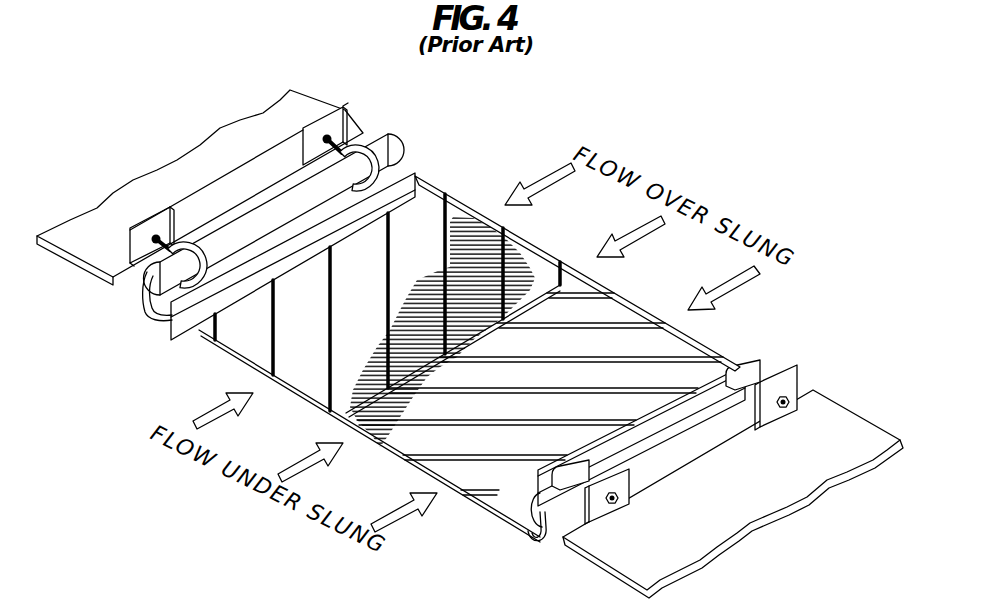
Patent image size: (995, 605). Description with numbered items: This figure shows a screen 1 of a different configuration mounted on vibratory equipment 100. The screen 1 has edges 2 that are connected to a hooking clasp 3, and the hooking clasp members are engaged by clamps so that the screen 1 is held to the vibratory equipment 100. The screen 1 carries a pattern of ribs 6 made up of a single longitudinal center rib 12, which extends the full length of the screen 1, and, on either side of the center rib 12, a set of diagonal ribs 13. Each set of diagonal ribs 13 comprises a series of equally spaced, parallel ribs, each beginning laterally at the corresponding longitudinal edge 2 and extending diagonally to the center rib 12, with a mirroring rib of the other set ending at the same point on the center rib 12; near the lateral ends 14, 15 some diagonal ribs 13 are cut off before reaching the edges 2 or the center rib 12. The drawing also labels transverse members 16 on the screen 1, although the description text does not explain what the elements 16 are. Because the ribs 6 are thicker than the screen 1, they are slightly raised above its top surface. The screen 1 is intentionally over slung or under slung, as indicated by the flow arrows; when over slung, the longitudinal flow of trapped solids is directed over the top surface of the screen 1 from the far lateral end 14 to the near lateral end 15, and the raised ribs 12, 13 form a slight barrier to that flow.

The screen 1 is at (478, 196).
The edges 2 is at (438, 190).
The hooking clasp 3 is at (150, 321).
The ribs 6 is at (456, 360).
The center rib 12 is at (368, 412).
The diagonal ribs 13 is at (441, 457).
The far lateral end 14 is at (644, 314).
The near lateral end 15 is at (222, 354).
The vertical stiffeners 16 is at (276, 308).
The vibratory equipment 100 is at (146, 190).